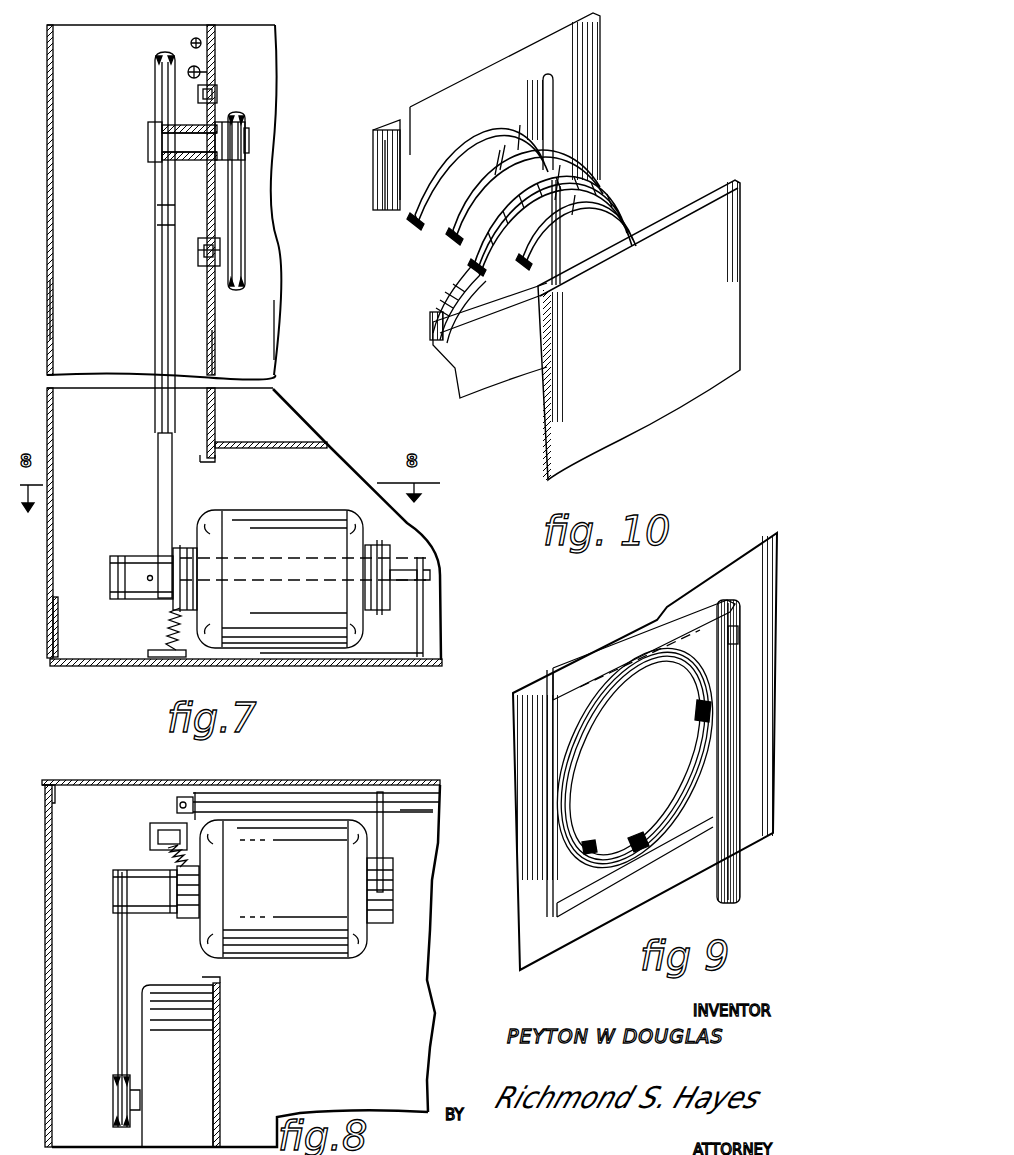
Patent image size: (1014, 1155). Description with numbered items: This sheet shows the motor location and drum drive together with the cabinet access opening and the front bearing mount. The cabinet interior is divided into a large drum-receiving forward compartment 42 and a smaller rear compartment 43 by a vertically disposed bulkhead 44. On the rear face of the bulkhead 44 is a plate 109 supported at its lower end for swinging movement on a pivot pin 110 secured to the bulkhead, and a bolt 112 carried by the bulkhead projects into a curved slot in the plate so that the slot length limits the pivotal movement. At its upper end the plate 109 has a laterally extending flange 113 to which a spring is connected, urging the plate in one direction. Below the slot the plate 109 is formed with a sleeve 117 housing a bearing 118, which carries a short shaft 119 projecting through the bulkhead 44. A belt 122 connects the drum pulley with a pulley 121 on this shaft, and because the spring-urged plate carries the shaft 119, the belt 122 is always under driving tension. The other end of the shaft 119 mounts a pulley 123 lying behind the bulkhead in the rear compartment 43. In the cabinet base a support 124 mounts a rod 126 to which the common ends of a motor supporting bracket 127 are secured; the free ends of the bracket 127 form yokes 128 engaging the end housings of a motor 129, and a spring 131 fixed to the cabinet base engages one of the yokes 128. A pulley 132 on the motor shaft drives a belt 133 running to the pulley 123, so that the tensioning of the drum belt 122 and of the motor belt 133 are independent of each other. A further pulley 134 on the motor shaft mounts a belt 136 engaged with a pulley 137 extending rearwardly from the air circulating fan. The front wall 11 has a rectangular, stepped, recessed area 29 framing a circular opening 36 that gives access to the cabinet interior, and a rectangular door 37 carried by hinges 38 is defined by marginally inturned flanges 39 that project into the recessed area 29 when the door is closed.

In FIG. 9, the front wall 11 is at (574, 650).
In FIG. 10, the rectangular stepped recessed area 29 is at (561, 34).
In FIG. 9, the rectangular stepped recessed area 29 is at (592, 897).
In FIG. 10, the circular opening 36 is at (405, 215).
In FIG. 9, the circular opening 36 is at (635, 758).
In FIG. 9, the rectangular door 37 is at (730, 868).
In FIG. 9, the hinges 38 is at (738, 638).
In FIG. 10, the marginally inturned flanges 39 is at (713, 176).
In FIG. 7, the forward compartment 42 is at (255, 335).
In FIG. 7, the rear compartment 43 is at (70, 306).
In FIG. 7, the bulkhead 44 is at (216, 359).
In FIG. 8, the bulkhead 44 is at (216, 1030).
In FIG. 7, the plate 109 is at (206, 206).
In FIG. 7, the pivot pin 110 is at (200, 251).
In FIG. 7, the bolt 112 is at (218, 86).
In FIG. 7, the laterally extending flange 113 is at (202, 72).
In FIG. 7, the sleeve 117 is at (188, 160).
In FIG. 7, the bearing 118 is at (178, 130).
In FIG. 7, the short shaft 119 is at (247, 143).
In FIG. 7, the pulley 121 is at (244, 170).
In FIG. 7, the belt 122 is at (246, 235).
In FIG. 7, the pulley 123 is at (158, 222).
In FIG. 8, the support 124 is at (434, 785).
In FIG. 8, the rod 126 is at (405, 812).
In FIG. 8, the motor supporting bracket 127 is at (383, 848).
In FIG. 8, the yokes 128 is at (393, 890).
In FIG. 7, the motor 129 is at (266, 510).
In FIG. 8, the motor 129 is at (360, 950).
In FIG. 7, the spring 131 is at (172, 630).
In FIG. 8, the spring 131 is at (166, 842).
In FIG. 7, the pulley 132 is at (180, 546).
In FIG. 8, the pulley 132 is at (170, 912).
In FIG. 7, the belt 133 is at (158, 462).
In FIG. 7, the pulley 134 is at (108, 562).
In FIG. 8, the pulley 134 is at (116, 887).
In FIG. 8, the belt 136 is at (118, 982).
In FIG. 8, the pulley 137 is at (114, 1092).